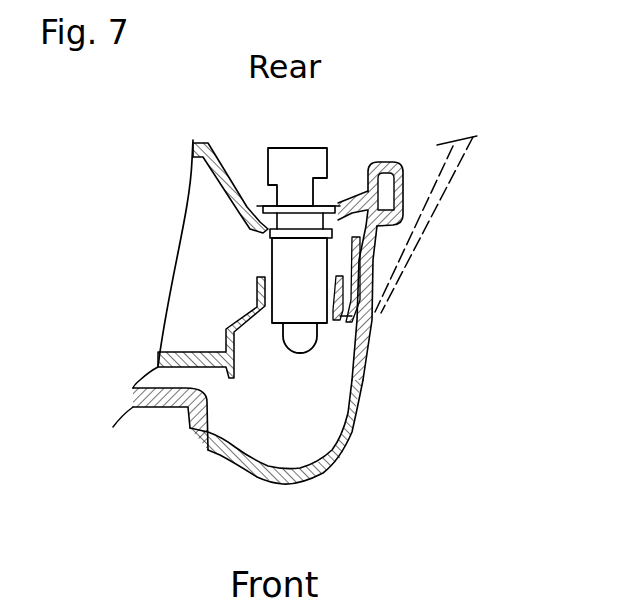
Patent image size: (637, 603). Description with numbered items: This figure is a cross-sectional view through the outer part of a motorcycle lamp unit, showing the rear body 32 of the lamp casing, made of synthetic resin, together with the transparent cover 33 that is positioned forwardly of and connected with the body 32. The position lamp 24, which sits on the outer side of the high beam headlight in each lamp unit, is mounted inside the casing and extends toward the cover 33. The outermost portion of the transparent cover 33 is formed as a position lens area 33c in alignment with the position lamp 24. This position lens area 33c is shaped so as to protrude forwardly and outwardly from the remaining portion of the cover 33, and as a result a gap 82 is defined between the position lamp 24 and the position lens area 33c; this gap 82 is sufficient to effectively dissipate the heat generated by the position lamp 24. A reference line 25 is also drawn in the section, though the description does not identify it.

The body 32 is at (233, 159).
The position lamp 24 is at (300, 297).
The reference line 25 is at (418, 252).
The gap 82 is at (293, 383).
The transparent cover 33 is at (152, 408).
The position lens area 33c is at (282, 485).